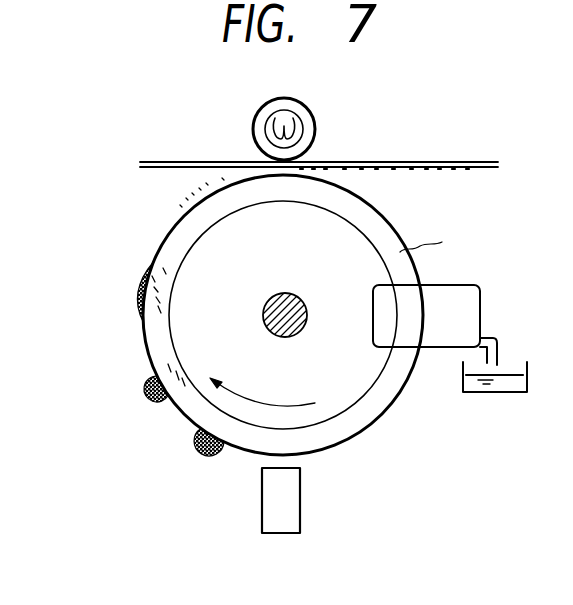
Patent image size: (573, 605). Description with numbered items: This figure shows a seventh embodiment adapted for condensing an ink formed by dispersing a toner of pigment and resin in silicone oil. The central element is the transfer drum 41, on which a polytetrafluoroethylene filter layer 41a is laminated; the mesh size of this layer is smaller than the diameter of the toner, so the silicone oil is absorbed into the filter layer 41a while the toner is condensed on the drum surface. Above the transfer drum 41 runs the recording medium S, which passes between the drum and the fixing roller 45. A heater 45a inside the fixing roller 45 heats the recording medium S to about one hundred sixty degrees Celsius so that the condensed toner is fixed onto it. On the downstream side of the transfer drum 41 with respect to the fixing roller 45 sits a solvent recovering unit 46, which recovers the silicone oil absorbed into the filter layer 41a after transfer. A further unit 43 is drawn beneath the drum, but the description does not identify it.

The transfer drum 41 is at (118, 341).
The polytetrafluoroethylene filter layer 41a is at (442, 239).
The charger 43 is at (292, 512).
The fixing roller 45 is at (315, 132).
The heater 45a is at (300, 118).
The solvent recovering unit 46 is at (472, 293).
The recording medium S is at (463, 162).